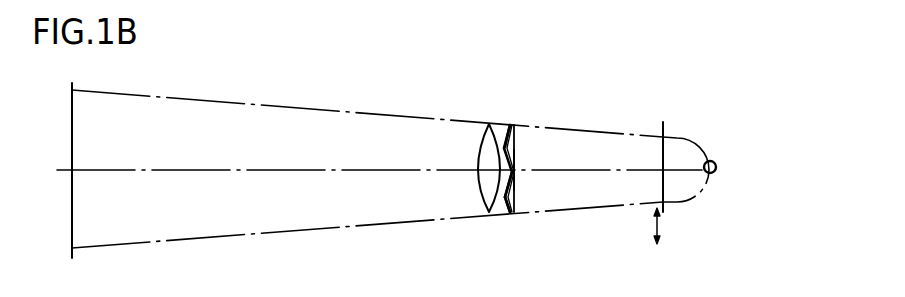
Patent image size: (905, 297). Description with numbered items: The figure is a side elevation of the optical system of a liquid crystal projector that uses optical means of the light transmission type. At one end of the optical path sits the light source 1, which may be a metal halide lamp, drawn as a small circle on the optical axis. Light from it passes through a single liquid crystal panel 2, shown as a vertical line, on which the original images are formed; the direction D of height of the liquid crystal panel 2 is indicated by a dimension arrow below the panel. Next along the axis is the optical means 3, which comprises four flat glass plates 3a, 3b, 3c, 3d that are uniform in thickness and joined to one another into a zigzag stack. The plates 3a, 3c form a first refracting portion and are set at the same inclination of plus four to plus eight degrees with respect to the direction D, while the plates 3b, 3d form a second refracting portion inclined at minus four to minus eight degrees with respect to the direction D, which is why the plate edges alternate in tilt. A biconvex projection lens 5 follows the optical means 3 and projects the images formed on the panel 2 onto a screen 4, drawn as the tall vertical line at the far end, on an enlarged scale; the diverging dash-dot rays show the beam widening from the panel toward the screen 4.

The light source 1 is at (712, 160).
The liquid crystal panel 2 is at (663, 122).
The optical means 3 is at (549, 90).
The flat glass plate 3a is at (510, 127).
The flat glass plate 3b is at (514, 167).
The flat glass plate 3c is at (513, 187).
The flat glass plate 3d is at (503, 232).
The screen 4 is at (73, 84).
The projection lens 5 is at (492, 124).
The direction of height of the liquid crystal panel D is at (657, 228).